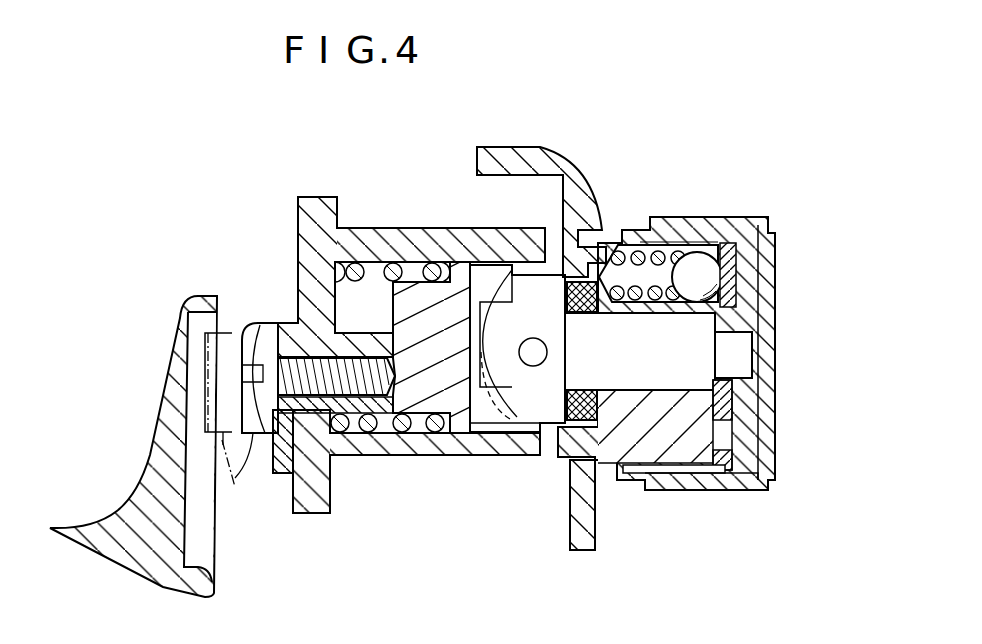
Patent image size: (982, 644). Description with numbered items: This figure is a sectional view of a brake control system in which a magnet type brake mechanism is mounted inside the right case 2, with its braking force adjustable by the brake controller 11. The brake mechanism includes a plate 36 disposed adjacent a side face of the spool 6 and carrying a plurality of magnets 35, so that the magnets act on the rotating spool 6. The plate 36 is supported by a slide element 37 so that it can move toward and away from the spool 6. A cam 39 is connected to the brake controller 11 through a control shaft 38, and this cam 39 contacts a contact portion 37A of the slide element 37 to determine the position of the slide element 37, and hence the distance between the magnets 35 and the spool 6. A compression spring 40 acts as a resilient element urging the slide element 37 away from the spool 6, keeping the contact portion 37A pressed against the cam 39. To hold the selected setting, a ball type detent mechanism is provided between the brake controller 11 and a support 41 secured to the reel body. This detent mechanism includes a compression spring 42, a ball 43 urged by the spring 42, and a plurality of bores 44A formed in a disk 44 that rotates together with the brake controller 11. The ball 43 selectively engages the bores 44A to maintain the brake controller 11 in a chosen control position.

The right case 2 is at (540, 148).
The spool 6 is at (102, 520).
The brake controller 11 is at (748, 220).
The magnets 35 is at (233, 429).
The plate 36 is at (280, 477).
The slide element 37 is at (425, 397).
The contact portion 37A is at (488, 423).
The control shaft 38 is at (735, 355).
The cam 39 is at (527, 293).
The compression spring 40 is at (368, 228).
The support 41 is at (677, 450).
The compression spring 42 is at (640, 258).
The ball 43 is at (697, 263).
The disk 44 is at (722, 468).
The bores 44A is at (735, 281).